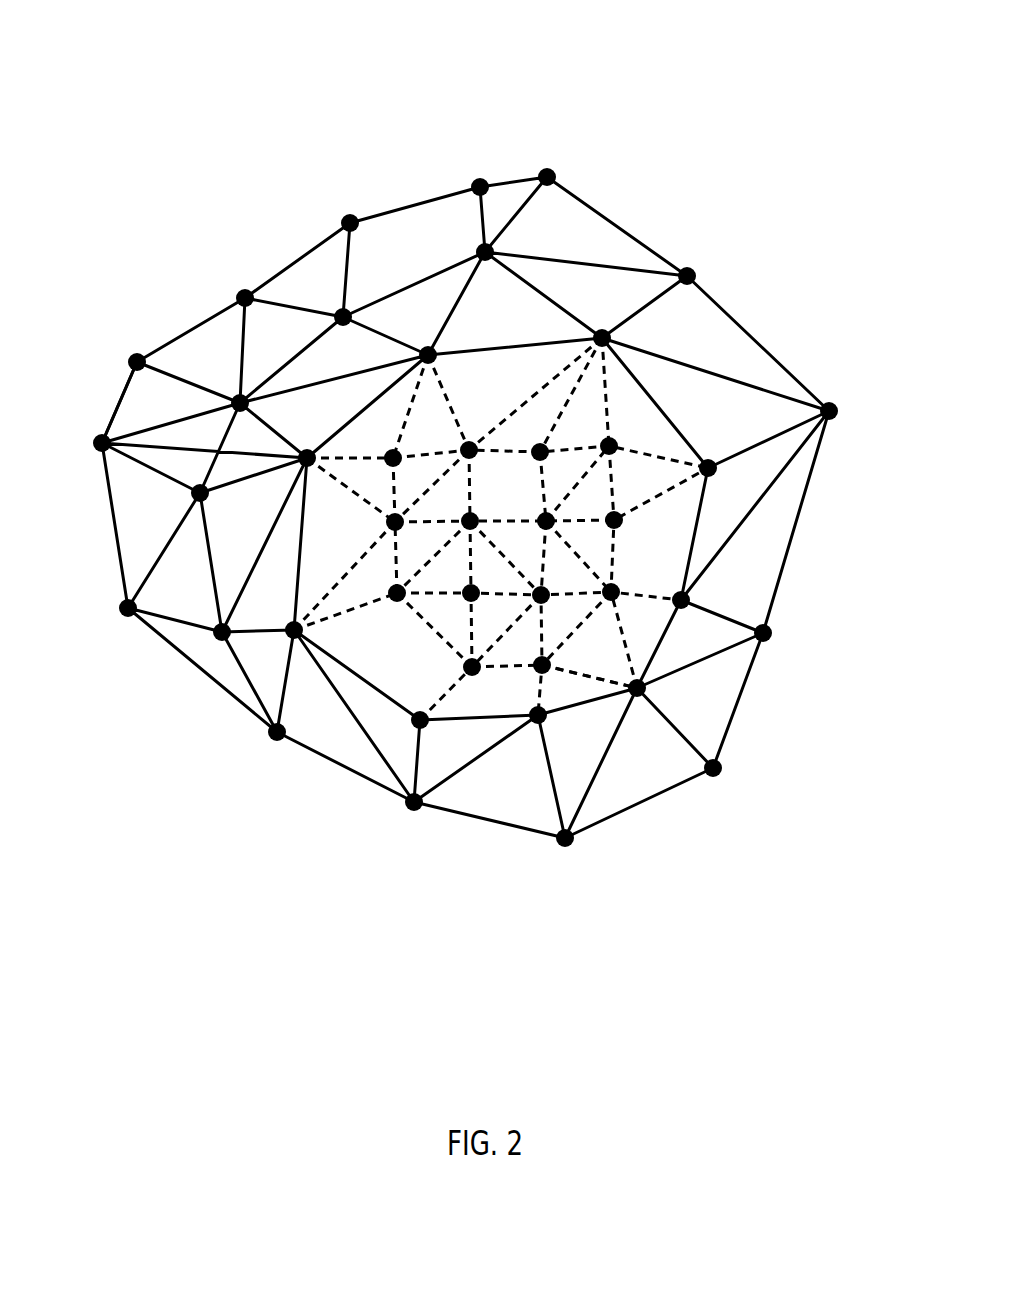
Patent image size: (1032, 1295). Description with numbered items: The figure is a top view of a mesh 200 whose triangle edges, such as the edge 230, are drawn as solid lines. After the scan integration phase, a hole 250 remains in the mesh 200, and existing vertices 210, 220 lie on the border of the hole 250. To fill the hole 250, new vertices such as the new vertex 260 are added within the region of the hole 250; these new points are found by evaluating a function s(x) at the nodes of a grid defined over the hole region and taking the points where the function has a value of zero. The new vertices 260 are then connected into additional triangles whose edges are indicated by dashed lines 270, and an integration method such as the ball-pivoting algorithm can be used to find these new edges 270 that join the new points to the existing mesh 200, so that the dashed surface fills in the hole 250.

The mesh 200 is at (433, 47).
The vertex 210 is at (304, 450).
The vertex 220 is at (711, 462).
The triangle edge 230 is at (127, 388).
The hole 250 is at (520, 377).
The new vertex 260 is at (551, 518).
The dashed-line edge 270 is at (602, 680).